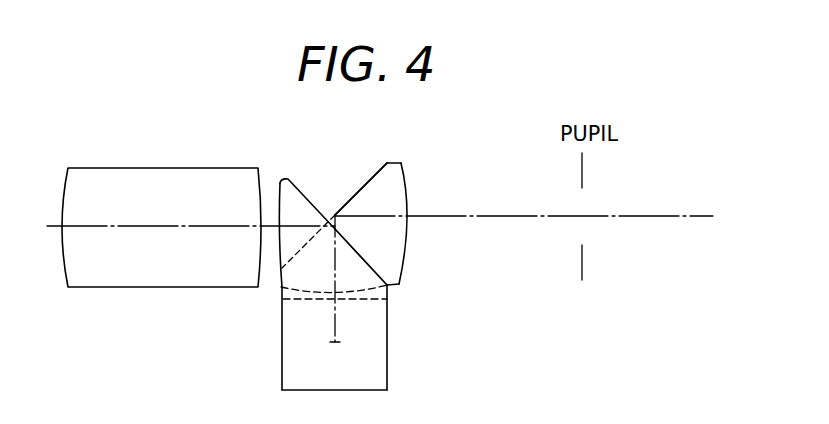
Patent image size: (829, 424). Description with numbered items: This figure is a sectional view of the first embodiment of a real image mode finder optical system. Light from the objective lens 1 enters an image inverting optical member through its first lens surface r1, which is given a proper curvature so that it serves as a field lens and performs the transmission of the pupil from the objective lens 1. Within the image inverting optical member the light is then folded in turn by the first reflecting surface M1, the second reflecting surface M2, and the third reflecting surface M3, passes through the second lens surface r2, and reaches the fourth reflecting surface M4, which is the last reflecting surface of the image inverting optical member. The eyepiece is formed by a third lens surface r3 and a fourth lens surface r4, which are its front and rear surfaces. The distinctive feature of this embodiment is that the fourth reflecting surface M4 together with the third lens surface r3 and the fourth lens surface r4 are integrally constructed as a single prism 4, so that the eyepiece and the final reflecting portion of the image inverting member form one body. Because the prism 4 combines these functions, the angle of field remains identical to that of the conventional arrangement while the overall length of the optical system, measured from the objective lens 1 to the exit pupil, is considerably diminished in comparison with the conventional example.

The objective lens 1 is at (165, 183).
The prism 4 is at (394, 198).
The first lens surface r1 is at (278, 194).
The second lens surface r2 is at (290, 300).
The third lens surface r3 is at (282, 287).
The fourth lens surface r4 is at (407, 176).
The first reflecting surface M1 is at (377, 269).
The second reflecting surface M2 is at (377, 370).
The third reflecting surface M3 is at (375, 328).
The fourth reflecting surface M4 is at (355, 193).